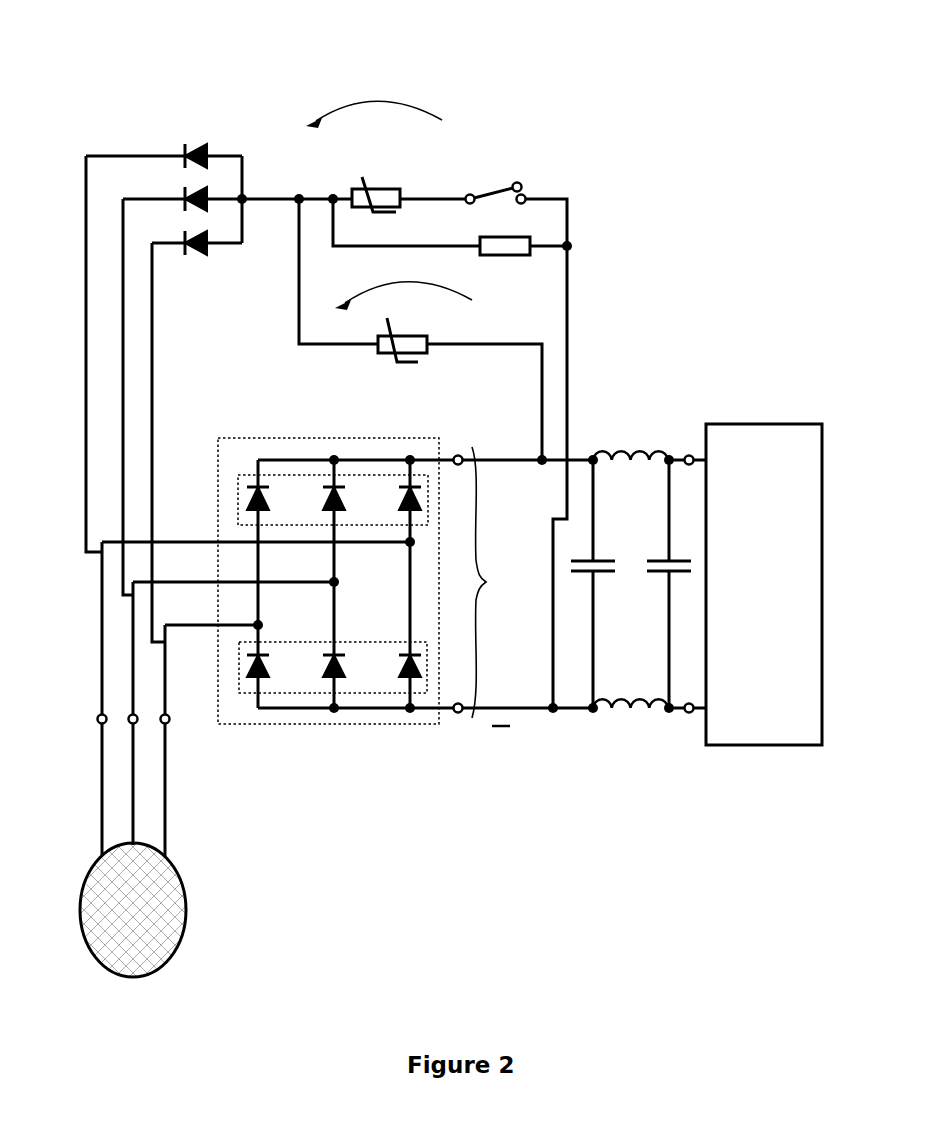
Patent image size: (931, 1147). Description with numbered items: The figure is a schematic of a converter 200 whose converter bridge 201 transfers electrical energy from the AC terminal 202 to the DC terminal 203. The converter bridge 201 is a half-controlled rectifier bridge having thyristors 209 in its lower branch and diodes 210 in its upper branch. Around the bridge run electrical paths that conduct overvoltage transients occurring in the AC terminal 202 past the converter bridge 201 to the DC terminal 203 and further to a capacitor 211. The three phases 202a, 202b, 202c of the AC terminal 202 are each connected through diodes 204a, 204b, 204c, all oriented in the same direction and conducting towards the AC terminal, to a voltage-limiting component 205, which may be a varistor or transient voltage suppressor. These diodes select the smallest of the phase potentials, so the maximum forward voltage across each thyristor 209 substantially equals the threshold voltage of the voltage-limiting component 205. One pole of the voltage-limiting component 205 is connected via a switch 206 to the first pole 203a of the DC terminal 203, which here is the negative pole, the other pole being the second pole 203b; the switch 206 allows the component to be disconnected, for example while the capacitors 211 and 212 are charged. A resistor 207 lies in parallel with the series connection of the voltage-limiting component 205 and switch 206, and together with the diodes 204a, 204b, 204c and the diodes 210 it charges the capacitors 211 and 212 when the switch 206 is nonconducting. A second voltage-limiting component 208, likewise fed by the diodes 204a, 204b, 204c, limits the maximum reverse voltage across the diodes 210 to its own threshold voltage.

The converter 200 is at (266, 66).
The converter bridge 201 is at (332, 439).
The AC terminal 202 is at (170, 733).
The phase 202a is at (101, 800).
The phase 202b is at (133, 807).
The phase 202c is at (168, 788).
The DC terminal 203 is at (501, 582).
The first pole of the DC terminal 203a is at (458, 713).
The second pole of the DC terminal 203b is at (458, 455).
The diode 204a is at (183, 150).
The diode 204b is at (183, 194).
The diode 204c is at (178, 252).
The voltage-limiting component 205 is at (365, 178).
The switch 206 is at (494, 184).
The resistor 207 is at (519, 255).
The second voltage-limiting component 208 is at (395, 332).
The thyristors 209 is at (247, 694).
The diodes 210 is at (247, 473).
The capacitor 211 is at (610, 559).
The capacitor 212 is at (660, 574).